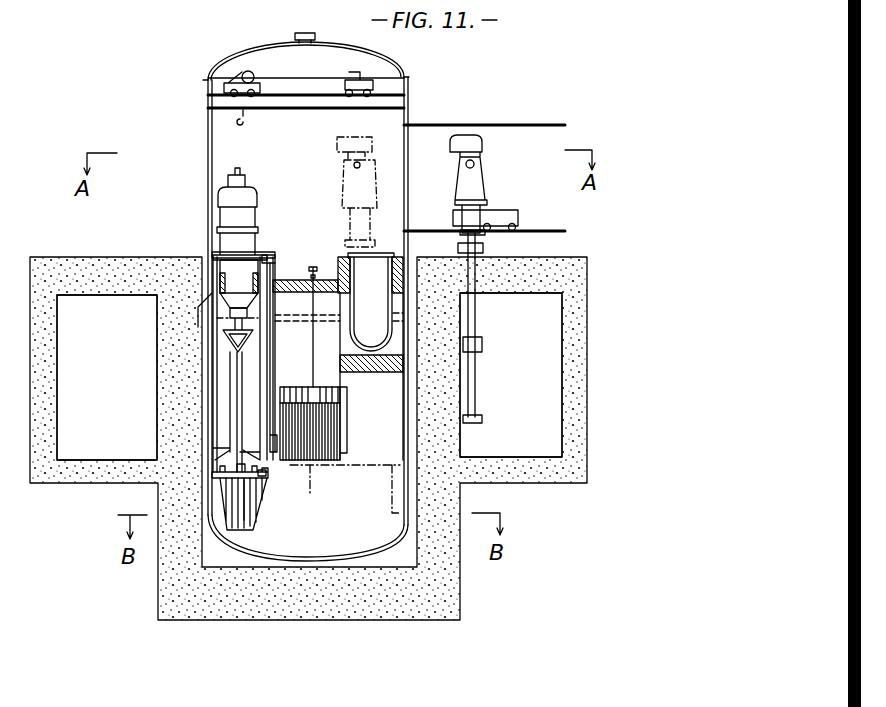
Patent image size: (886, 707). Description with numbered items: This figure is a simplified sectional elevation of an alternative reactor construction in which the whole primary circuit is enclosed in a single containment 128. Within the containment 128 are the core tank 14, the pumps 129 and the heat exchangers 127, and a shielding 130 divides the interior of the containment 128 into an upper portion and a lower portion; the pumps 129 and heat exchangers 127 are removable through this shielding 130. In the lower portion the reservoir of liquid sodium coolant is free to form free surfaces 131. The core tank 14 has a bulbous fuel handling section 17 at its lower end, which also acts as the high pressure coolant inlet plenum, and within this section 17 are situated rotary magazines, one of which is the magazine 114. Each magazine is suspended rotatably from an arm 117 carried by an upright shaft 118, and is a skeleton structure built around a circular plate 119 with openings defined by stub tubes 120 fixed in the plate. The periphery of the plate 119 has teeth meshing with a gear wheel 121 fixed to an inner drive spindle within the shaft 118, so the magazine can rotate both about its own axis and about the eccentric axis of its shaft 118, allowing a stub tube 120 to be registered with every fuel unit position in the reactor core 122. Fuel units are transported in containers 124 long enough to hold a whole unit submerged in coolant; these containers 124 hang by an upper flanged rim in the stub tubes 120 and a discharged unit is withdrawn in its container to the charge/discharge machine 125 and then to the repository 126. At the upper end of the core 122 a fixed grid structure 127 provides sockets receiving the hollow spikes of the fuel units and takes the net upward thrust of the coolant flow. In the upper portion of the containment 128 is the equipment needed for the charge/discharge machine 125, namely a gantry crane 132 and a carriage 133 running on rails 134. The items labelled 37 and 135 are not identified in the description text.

The core tank 14 is at (337, 440).
The fuel handling section 17 is at (384, 541).
The control rod 37 is at (318, 297).
The rotary magazine 114 is at (250, 515).
The arm 117 is at (263, 475).
The upright shaft 118 is at (262, 385).
The circular plate 119 is at (222, 477).
The stub tube 120 is at (215, 473).
The gear wheel 121 is at (263, 483).
The reactor core 122 is at (323, 430).
The container 124 is at (227, 515).
The charge/discharge machine 125 is at (480, 165).
The repository 126 is at (535, 377).
The grid structure 127 is at (328, 396).
The containment 128 is at (213, 165).
The pump 129 is at (238, 298).
The shielding 130 is at (404, 288).
The free surface 131 is at (225, 315).
The gantry crane 132 is at (235, 80).
The carriage 133 is at (497, 218).
The rails 134 is at (532, 231).
The thimble tube 135 is at (390, 310).